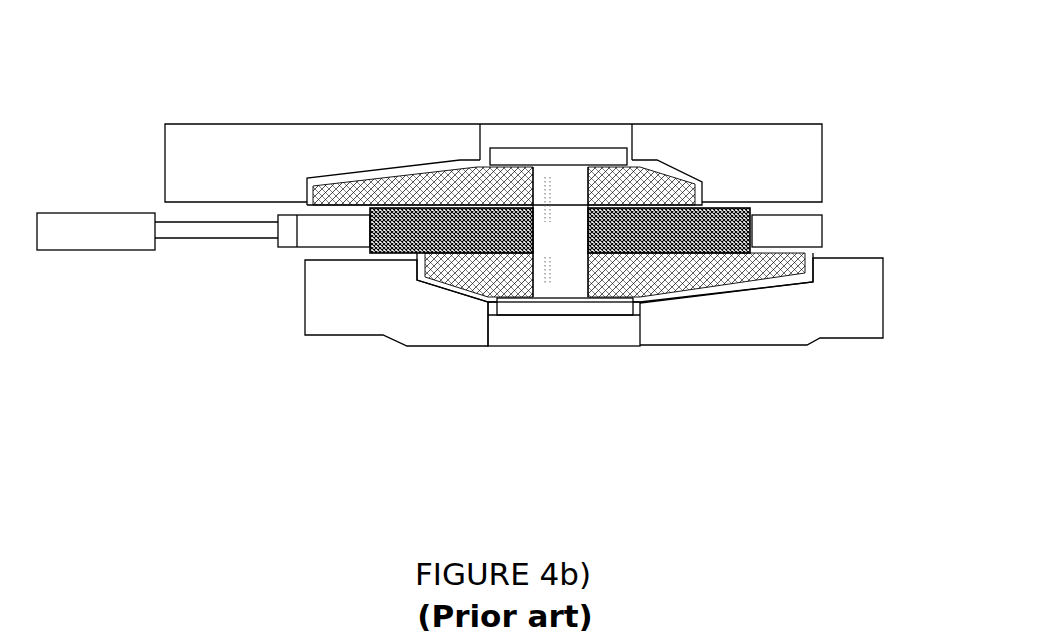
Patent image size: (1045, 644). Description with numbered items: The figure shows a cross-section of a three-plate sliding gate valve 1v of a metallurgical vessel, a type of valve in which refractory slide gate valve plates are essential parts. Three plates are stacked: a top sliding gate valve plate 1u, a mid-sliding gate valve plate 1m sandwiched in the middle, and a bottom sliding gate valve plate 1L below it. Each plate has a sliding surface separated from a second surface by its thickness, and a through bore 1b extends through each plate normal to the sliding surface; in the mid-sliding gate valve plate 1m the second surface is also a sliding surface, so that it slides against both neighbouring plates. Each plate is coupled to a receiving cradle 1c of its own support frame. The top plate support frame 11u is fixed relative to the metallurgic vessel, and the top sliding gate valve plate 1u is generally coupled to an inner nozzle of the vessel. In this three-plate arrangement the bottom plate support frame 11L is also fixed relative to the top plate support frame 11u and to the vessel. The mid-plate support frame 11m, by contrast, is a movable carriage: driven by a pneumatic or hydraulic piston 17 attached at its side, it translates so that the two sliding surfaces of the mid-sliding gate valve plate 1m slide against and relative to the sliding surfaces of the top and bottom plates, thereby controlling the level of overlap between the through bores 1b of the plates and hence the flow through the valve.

The sliding gate valve 1v is at (163, 112).
The top plate support frame 11u is at (275, 122).
The receiving cradle 1c is at (378, 170).
The top sliding gate valve plate 1u is at (657, 180).
The mid-sliding gate valve plate 1m is at (420, 238).
The bottom sliding gate valve plate 1L is at (727, 267).
The through bore 1b is at (565, 198).
The bottom plate support frame 11L is at (862, 257).
The pneumatic or hydraulic piston 17 is at (182, 238).
The mid-plate support frame 11m is at (313, 236).